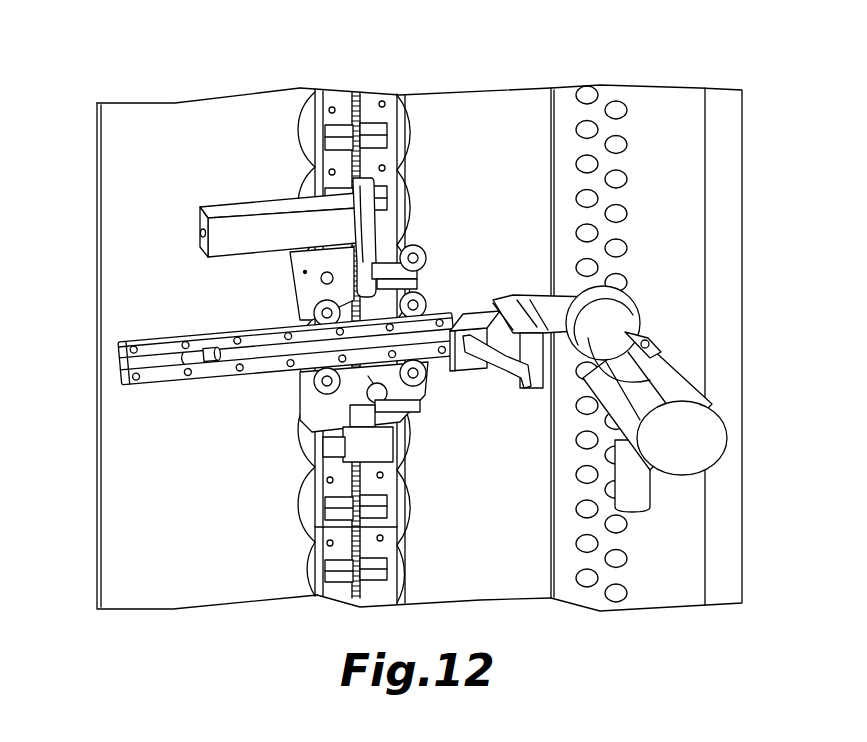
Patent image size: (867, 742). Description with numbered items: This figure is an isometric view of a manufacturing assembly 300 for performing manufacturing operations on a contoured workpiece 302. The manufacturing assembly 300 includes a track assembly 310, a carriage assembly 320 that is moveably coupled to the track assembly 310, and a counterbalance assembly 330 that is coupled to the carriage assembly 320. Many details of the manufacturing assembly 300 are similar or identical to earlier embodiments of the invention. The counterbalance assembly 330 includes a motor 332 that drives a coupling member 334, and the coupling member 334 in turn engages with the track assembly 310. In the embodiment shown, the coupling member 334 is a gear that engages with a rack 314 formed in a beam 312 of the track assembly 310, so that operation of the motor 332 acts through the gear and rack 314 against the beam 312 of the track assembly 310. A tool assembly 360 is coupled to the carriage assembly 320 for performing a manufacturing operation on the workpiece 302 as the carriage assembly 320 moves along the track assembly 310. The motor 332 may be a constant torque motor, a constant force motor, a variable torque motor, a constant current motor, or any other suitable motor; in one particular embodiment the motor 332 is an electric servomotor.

The manufacturing assembly 300 is at (180, 80).
The contoured workpiece 302 is at (122, 160).
The track assembly 310 is at (414, 127).
The beam 312 is at (403, 192).
The rack 314 is at (356, 93).
The carriage assembly 320 is at (238, 290).
The counterbalance assembly 330 is at (224, 163).
The motor 332 is at (222, 207).
The coupling member 334 is at (313, 165).
The tool assembly 360 is at (657, 303).